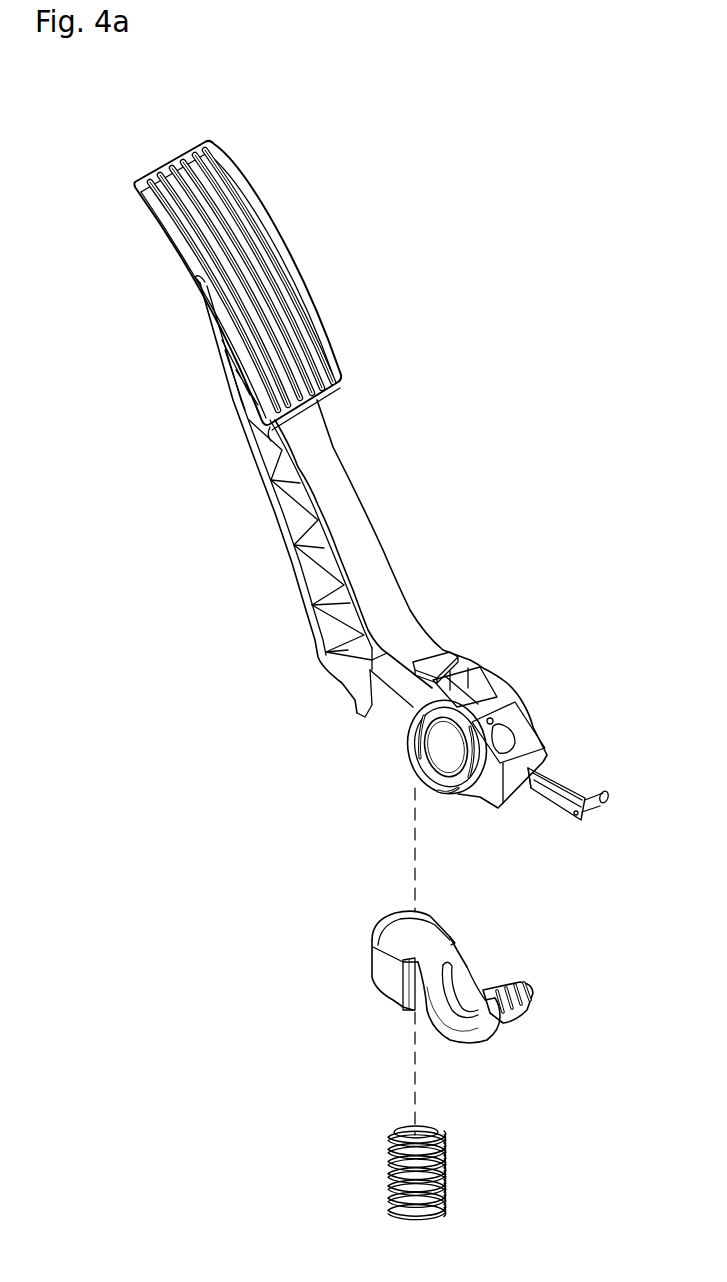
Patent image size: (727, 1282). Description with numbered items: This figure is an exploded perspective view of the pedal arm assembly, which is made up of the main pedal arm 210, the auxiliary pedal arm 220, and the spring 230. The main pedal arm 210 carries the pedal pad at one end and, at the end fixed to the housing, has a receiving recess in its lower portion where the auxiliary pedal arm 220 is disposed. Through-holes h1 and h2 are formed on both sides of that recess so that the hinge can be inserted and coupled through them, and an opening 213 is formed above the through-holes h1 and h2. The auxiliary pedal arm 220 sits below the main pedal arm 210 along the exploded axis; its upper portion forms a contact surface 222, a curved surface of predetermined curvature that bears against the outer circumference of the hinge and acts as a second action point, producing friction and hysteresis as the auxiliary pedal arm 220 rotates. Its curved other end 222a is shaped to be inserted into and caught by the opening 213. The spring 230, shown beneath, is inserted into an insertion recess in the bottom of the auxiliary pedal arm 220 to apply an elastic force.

The main pedal arm 210 is at (371, 480).
The through-hole h1 is at (523, 677).
The through-hole h2 is at (443, 743).
The opening 213 is at (500, 738).
The auxiliary pedal arm 220 is at (470, 942).
The contact surface 222 is at (467, 988).
The other end of the auxiliary pedal arm 222a is at (537, 990).
The spring 230 is at (443, 1172).